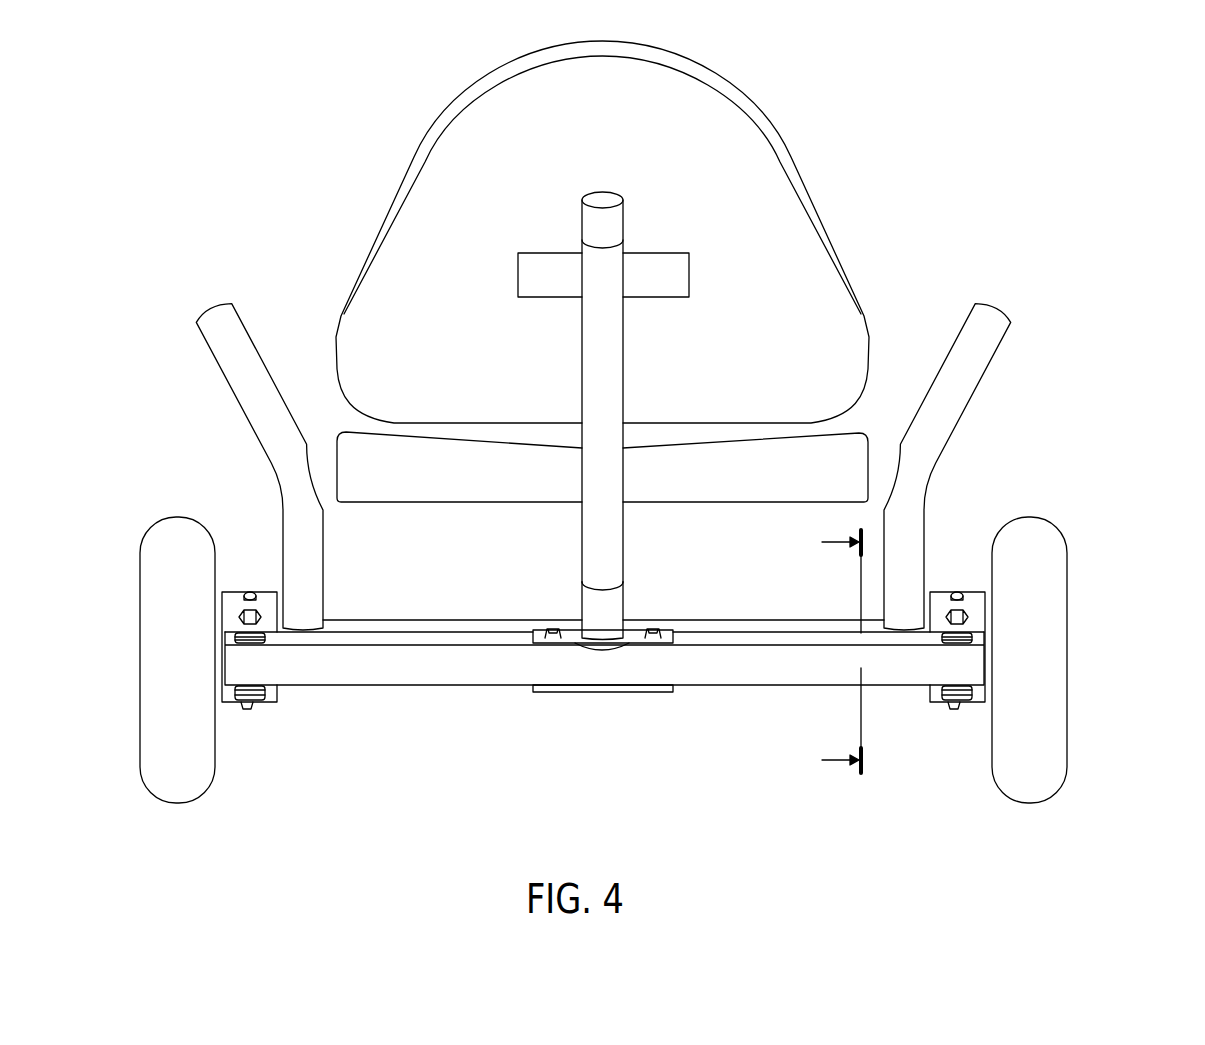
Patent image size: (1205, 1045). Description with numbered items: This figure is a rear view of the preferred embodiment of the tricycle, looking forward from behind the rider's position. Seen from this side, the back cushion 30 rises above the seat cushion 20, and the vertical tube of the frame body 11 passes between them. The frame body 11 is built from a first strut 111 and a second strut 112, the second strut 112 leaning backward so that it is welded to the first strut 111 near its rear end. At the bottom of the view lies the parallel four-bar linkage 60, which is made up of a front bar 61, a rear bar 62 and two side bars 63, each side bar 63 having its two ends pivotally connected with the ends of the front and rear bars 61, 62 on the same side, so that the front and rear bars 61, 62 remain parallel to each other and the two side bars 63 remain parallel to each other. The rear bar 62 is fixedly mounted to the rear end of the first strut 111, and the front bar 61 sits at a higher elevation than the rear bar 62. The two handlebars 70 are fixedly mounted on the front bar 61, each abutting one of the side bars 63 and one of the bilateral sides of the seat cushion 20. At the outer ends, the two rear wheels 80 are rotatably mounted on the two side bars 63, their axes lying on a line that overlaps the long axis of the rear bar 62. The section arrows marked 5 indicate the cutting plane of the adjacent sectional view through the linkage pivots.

The section line 5- 5 is at (841, 639).
The frame body 11 is at (519, 511).
The first strut 111 is at (597, 612).
The second strut 112 is at (602, 533).
The seat cushion 20 is at (854, 456).
The back cushion 30 is at (813, 271).
The parallel four-bar linkage 60 is at (603, 750).
The front bar 61 is at (790, 625).
The rear bar 62 is at (752, 673).
The side bars 63 is at (937, 618).
The handlebars 70 is at (962, 358).
The rear wheels 80 is at (1040, 584).